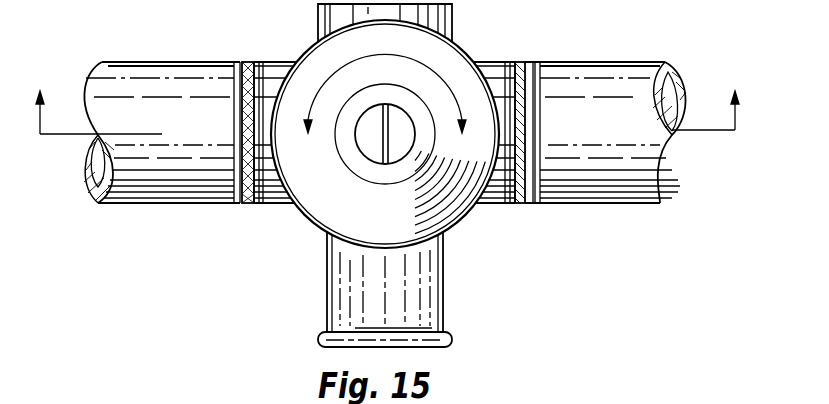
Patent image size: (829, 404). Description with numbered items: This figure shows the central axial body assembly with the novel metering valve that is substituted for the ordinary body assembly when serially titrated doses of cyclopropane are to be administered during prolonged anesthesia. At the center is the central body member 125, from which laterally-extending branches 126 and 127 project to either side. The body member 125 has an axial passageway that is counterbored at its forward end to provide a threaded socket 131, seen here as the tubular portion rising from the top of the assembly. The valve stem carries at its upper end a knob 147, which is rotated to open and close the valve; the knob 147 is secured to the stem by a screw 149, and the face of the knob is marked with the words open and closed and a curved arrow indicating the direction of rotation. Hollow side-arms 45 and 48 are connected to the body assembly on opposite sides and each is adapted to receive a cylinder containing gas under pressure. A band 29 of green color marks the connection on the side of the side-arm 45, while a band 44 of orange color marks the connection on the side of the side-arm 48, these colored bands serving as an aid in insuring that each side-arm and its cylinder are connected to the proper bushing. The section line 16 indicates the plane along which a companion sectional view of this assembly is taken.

The section line 16- 16 is at (389, 103).
The band 29 is at (520, 62).
The band 44 is at (248, 60).
The side-arm 45 is at (615, 204).
The side-arm 48 is at (160, 205).
The central body member 125 is at (443, 249).
The laterally-extending branch 126 is at (496, 206).
The laterally-extending branch 127 is at (278, 206).
The threaded socket 131 is at (453, 15).
The knob 147 is at (328, 206).
The screw 149 is at (413, 105).